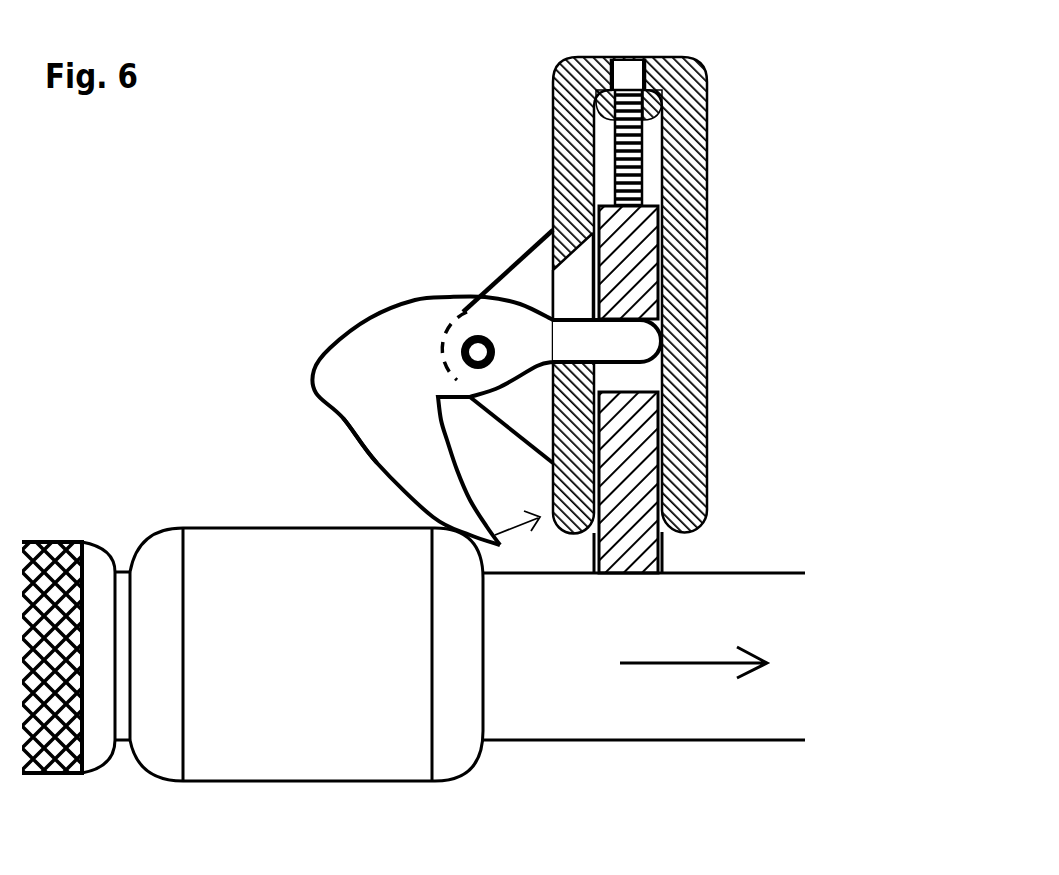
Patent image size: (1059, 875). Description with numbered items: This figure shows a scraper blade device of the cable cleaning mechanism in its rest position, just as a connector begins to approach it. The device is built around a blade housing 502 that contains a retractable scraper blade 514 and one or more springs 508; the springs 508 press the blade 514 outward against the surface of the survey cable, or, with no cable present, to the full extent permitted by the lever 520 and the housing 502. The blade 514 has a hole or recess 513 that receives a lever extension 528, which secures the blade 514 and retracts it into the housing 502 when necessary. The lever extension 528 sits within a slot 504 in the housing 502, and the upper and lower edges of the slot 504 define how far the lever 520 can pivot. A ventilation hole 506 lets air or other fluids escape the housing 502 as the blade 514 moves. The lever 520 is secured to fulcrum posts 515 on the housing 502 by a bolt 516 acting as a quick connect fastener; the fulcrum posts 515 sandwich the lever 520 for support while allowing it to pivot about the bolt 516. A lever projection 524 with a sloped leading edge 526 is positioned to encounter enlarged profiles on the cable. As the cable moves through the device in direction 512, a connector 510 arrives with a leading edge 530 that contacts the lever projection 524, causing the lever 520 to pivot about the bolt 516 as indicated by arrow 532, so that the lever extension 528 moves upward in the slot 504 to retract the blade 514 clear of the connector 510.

The blade housing 502 is at (705, 150).
The slot 504 is at (550, 280).
The ventilation hole 506 is at (629, 62).
The spring 508 is at (625, 153).
The connector 510 is at (402, 783).
The direction 512 is at (693, 653).
The hole or recess 513 is at (650, 375).
The retractable scraper blade 514 is at (602, 213).
The fulcrum post 515 is at (490, 282).
The bolt 516 is at (482, 367).
The lever 520 is at (395, 311).
The lever projection 524 is at (436, 466).
The sloped leading edge 526 is at (372, 462).
The lever extension 528 is at (641, 340).
The leading edge 530 is at (440, 527).
The arrow 532 is at (523, 537).